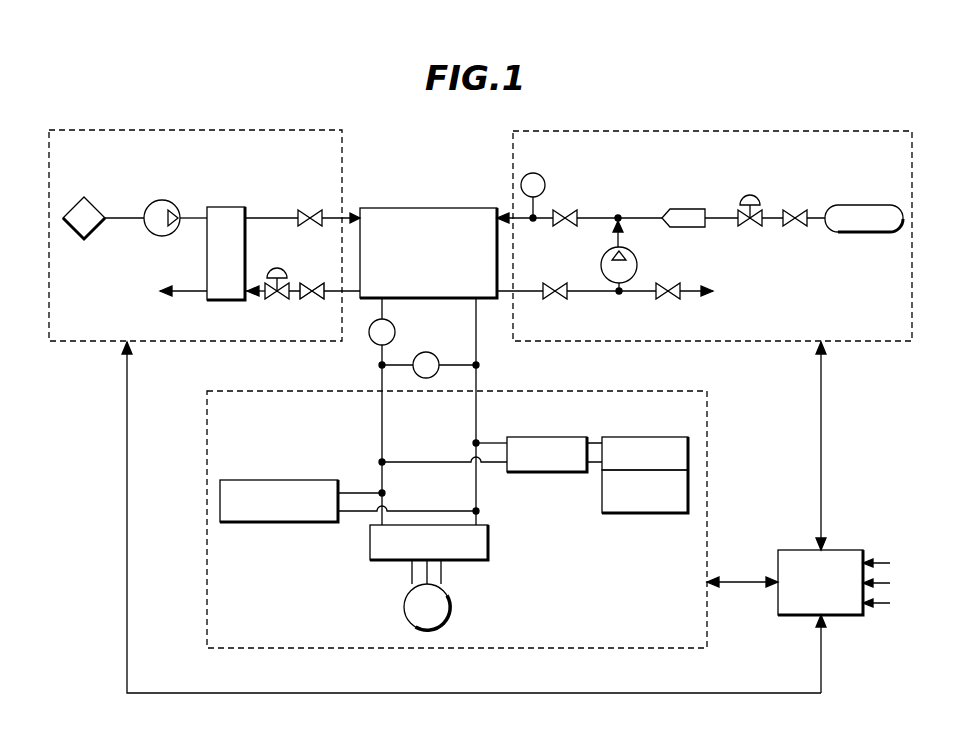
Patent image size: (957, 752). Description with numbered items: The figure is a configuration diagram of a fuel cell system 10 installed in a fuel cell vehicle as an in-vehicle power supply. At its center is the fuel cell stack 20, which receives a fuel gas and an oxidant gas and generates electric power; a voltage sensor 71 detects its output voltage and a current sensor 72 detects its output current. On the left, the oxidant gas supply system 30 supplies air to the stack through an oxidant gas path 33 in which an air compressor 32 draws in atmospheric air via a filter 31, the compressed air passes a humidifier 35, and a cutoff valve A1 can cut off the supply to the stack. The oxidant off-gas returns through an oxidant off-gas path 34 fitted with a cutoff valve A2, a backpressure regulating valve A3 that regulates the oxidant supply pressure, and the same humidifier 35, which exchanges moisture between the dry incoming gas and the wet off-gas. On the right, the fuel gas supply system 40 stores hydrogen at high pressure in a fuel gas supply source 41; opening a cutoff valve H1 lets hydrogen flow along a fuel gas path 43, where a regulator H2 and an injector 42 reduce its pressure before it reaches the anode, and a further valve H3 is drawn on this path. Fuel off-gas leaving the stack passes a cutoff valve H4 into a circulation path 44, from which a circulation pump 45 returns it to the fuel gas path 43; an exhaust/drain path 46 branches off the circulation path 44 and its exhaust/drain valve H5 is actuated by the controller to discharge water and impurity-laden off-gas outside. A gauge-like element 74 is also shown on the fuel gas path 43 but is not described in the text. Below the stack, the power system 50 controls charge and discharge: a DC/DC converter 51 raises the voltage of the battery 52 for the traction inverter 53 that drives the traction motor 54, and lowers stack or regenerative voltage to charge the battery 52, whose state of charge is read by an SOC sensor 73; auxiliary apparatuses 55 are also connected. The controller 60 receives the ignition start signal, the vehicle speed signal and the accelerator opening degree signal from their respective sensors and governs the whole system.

The fuel cell system 10 is at (905, 102).
The fuel cell stack 20 is at (428, 208).
The oxidant gas supply system 30 is at (166, 130).
The filter 31 is at (96, 206).
The air compressor 32 is at (162, 200).
The oxidant gas path 33 is at (257, 217).
The oxidant off-gas path 34 is at (314, 284).
The humidifier 35 is at (226, 207).
The cutoff valve A1 is at (308, 210).
The cutoff valve A2 is at (310, 300).
The backpressure regulating valve A3 is at (278, 268).
The fuel gas supply system 40 is at (780, 130).
The fuel gas supply source 41 is at (866, 205).
The injector 42 is at (687, 209).
The fuel gas path 43 is at (598, 217).
The circulation path 44 is at (601, 293).
The circulation pump 45 is at (637, 262).
The exhaust/drain path 46 is at (690, 290).
The cutoff valve H1 is at (798, 210).
The regulator H2 is at (752, 195).
The inlet valve H3 is at (568, 210).
The cutoff valve H4 is at (556, 300).
The exhaust/drain valve H5 is at (668, 300).
The power system 50 is at (707, 445).
The DC/DC converter 51 is at (545, 437).
The battery 52 is at (640, 437).
The traction inverter 53 is at (488, 543).
The traction motor 54 is at (450, 605).
The auxiliary apparatuses 55 is at (282, 480).
The controller 60 is at (840, 550).
The voltage sensor 71 is at (428, 352).
The current sensor 72 is at (369, 339).
The SOC sensor 73 is at (630, 513).
The pressure sensor 74 is at (534, 173).